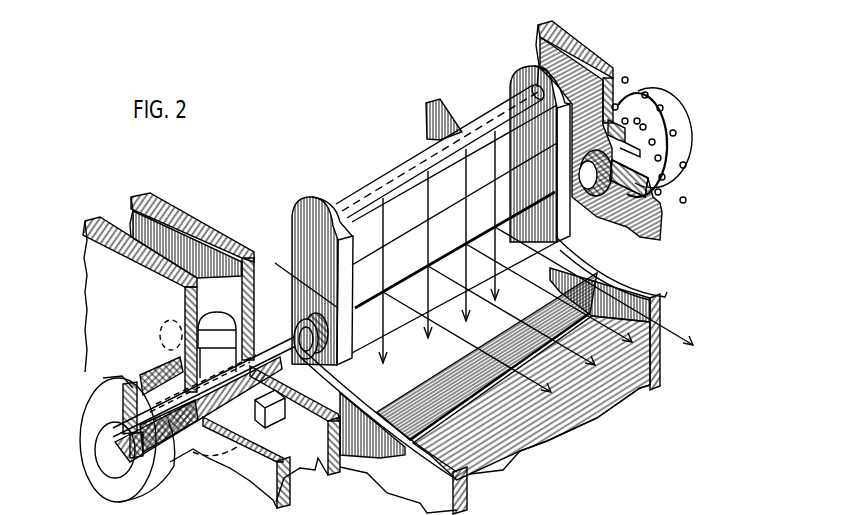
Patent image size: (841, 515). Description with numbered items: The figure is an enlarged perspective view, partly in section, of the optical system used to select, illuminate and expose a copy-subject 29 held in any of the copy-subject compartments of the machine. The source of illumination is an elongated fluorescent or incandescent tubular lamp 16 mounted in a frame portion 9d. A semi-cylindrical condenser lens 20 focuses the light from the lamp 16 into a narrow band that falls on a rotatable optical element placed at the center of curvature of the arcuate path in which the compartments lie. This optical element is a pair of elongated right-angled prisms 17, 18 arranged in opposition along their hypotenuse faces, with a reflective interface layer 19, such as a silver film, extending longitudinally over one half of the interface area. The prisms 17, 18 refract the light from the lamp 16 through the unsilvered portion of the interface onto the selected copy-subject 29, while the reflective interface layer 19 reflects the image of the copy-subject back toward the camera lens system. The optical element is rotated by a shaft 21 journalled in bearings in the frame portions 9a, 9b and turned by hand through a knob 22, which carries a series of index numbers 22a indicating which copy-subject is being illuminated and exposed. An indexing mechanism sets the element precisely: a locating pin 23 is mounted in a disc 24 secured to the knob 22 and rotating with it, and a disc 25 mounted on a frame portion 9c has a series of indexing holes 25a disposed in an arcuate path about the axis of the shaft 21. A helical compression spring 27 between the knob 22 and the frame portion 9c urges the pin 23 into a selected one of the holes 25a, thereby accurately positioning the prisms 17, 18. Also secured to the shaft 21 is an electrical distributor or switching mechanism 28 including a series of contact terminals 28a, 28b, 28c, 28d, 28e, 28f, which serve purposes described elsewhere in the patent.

The frame portion 9a is at (624, 212).
The frame portion 9b is at (319, 458).
The frame portion 9c is at (85, 297).
The frame portion 9d is at (290, 240).
The tubular lamp 16 is at (405, 165).
The right-angled prism 17 is at (296, 290).
The right-angled prism 18 is at (547, 240).
The reflective interface layer 19 is at (363, 310).
The semi-cylindrical condenser lens 20 is at (400, 207).
The shaft 21 is at (291, 350).
The knob 22 is at (113, 482).
The index numbers 22a is at (85, 416).
The locating pin 23 is at (230, 322).
The disc 24 is at (270, 410).
The disc 25 is at (220, 450).
The indexing holes 25a is at (182, 365).
The helical compression spring 27 is at (192, 450).
The electrical distributor 28 is at (687, 43).
The contact terminal 28a is at (625, 77).
The contact terminal 28b is at (645, 92).
The contact terminal 28c is at (660, 105).
The contact terminal 28d is at (674, 130).
The contact terminal 28e is at (685, 162).
The contact terminal 28f is at (686, 200).
The copy-subject 29 is at (423, 380).